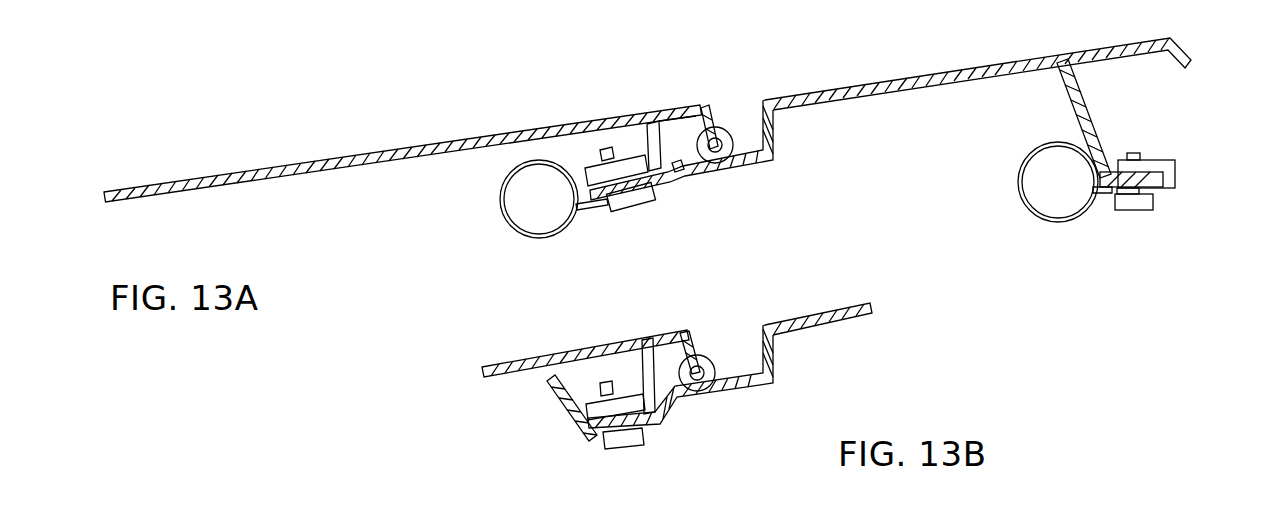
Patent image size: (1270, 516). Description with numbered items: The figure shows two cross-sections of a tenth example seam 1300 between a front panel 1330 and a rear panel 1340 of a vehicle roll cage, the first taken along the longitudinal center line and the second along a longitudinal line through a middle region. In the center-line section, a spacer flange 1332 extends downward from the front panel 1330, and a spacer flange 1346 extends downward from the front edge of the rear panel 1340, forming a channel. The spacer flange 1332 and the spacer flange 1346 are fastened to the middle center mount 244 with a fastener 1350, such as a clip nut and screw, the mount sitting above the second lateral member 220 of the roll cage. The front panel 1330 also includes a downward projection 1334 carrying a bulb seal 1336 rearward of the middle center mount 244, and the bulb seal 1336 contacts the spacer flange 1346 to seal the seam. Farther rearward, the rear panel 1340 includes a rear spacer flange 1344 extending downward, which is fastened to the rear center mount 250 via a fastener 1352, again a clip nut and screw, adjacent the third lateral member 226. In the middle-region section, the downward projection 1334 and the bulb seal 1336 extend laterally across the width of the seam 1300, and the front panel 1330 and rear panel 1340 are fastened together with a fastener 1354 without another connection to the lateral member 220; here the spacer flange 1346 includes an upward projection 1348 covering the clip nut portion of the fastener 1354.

In FIG. 13A, the tenth example seam 1300 is at (205, 127).
In FIG. 13A, the second lateral member 220 is at (502, 200).
In FIG. 13A, the third lateral member 226 is at (1030, 205).
In FIG. 13A, the middle center mount 244 is at (587, 212).
In FIG. 13A, the rear center mount 250 is at (1107, 191).
In FIG. 13A, the front panel 1330 is at (593, 122).
In FIG. 13B, the front panel 1330 is at (498, 378).
In FIG. 13A, the spacer flange 1332 is at (645, 123).
In FIG. 13A, the downward projection 1334 is at (711, 138).
In FIG. 13B, the downward projection 1334 is at (688, 350).
In FIG. 13A, the bulb seal 1336 is at (724, 128).
In FIG. 13B, the bulb seal 1336 is at (715, 357).
In FIG. 13A, the rear panel 1340 is at (1018, 65).
In FIG. 13B, the rear panel 1340 is at (850, 305).
In FIG. 13A, the rear spacer flange 1344 is at (1073, 98).
In FIG. 13A, the spacer flange 1346 is at (774, 142).
In FIG. 13B, the spacer flange 1346 is at (774, 367).
In FIG. 13B, the upward projection 1348 is at (567, 405).
In FIG. 13A, the fastener 1350 is at (625, 203).
In FIG. 13A, the fastener 1352 is at (1137, 204).
In FIG. 13B, the fastener 1354 is at (627, 446).